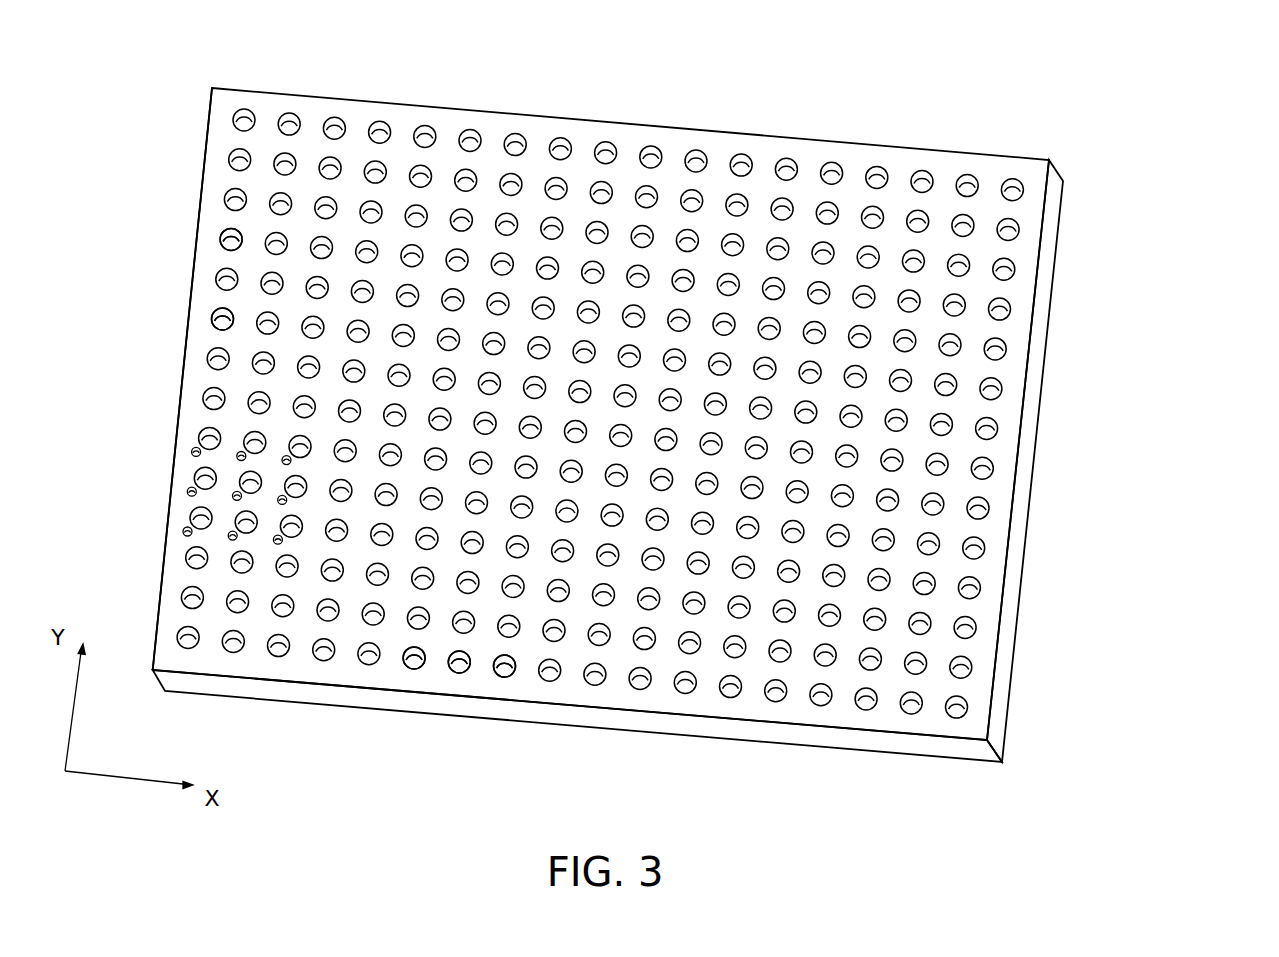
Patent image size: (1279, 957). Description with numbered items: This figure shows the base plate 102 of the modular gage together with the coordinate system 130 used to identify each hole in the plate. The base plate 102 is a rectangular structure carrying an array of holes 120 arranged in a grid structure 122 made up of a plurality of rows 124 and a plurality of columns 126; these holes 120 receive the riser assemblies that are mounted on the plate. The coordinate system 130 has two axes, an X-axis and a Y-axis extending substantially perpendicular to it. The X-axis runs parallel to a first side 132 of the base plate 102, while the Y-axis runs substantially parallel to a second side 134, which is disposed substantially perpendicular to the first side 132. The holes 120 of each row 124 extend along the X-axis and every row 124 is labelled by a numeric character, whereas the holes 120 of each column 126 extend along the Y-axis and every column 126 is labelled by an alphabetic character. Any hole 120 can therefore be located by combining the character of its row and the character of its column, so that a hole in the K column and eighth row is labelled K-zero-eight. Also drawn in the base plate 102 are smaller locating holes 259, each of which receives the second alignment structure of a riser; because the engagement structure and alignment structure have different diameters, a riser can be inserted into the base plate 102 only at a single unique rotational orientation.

The base plate 102 is at (668, 427).
The holes 120 is at (692, 150).
The grid structure 122 is at (799, 707).
The rows 124 is at (219, 242).
The columns 126 is at (500, 674).
The coordinate system 130 is at (1008, 290).
The first side 132 is at (332, 697).
The second side 134 is at (180, 385).
The locating hole 259 is at (191, 455).